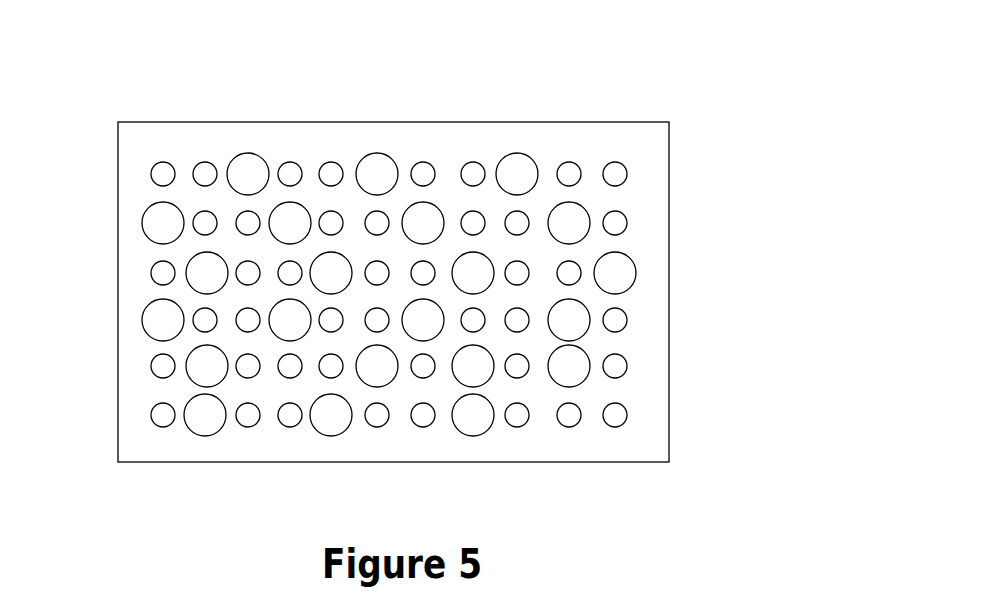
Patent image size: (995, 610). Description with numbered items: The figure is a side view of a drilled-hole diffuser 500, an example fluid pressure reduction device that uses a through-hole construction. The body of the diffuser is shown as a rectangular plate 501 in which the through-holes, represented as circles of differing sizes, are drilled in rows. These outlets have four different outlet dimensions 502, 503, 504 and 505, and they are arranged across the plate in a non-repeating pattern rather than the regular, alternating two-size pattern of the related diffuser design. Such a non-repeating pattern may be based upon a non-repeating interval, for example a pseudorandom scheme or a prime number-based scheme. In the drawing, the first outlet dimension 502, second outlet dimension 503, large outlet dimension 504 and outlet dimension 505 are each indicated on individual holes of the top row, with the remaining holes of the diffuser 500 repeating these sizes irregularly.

The drilled-hole diffuser 500 is at (634, 84).
The substrate 501 is at (669, 462).
The first outlet dimension 502 is at (152, 173).
The second outlet dimension 503 is at (202, 162).
The third outlet dimension 504 is at (250, 154).
The fourth outlet dimension 505 is at (288, 162).